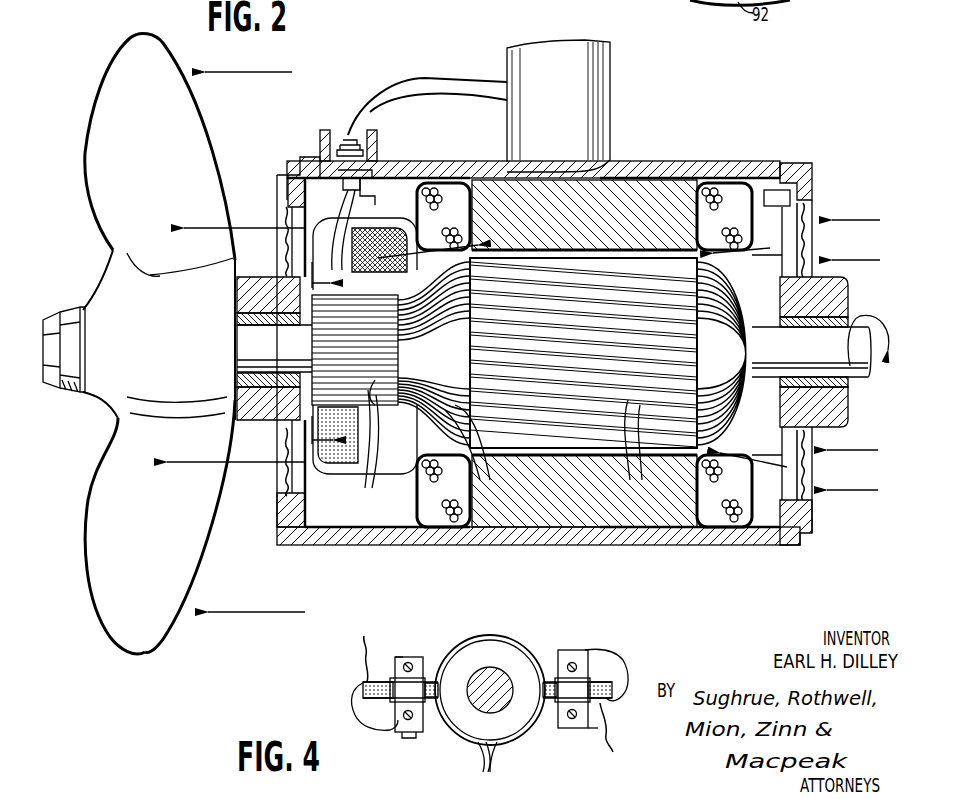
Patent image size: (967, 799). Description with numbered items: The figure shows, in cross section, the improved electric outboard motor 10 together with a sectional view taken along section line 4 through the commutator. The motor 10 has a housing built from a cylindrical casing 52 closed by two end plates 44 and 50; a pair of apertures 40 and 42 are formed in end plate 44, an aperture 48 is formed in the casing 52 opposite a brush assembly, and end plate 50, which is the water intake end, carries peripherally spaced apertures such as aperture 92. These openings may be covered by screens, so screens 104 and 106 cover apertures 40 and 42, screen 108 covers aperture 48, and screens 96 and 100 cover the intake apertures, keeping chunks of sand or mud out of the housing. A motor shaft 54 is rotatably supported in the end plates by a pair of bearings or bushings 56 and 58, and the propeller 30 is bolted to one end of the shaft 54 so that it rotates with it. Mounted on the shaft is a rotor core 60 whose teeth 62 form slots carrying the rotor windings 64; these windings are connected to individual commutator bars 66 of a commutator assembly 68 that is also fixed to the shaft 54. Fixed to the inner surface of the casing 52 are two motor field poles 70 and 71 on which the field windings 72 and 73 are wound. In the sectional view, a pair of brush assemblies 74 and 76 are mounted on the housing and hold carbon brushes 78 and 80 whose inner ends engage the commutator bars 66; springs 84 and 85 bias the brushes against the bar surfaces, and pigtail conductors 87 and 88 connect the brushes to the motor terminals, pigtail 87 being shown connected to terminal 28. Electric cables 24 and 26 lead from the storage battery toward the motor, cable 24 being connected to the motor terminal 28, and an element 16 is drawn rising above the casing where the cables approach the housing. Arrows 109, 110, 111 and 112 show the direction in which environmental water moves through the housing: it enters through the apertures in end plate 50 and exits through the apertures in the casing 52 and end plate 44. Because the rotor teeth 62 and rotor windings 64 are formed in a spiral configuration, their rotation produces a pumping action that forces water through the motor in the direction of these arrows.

In FIG. 2, the motor 10 is at (524, 548).
In FIG. 2, the brush holder tube 16 is at (598, 84).
In FIG. 2, the electric cable 24 is at (378, 92).
In FIG. 2, the electric cable 26 is at (395, 92).
In FIG. 2, the motor terminal 28 is at (350, 132).
In FIG. 2, the propeller 30 is at (122, 62).
In FIG. 2, the aperture 40 is at (285, 206).
In FIG. 2, the aperture 42 is at (281, 470).
In FIG. 2, the end plate 44 is at (285, 172).
In FIG. 2, the aperture 48 is at (345, 262).
In FIG. 2, the end plate 50 is at (810, 184).
In FIG. 2, the cylindrical casing 52 is at (672, 162).
In FIG. 2, the motor shaft 54 is at (279, 354).
In FIG. 4, the motor shaft 54 is at (507, 670).
In FIG. 2, the bearing or bushing 56 is at (251, 280).
In FIG. 2, the bearing or bushing 58 is at (853, 326).
In FIG. 2, the rotor core 60 is at (615, 546).
In FIG. 2, the rotor teeth 62 is at (637, 492).
In FIG. 2, the rotor windings 64 is at (490, 481).
In FIG. 2, the commutator bars 66 is at (382, 440).
In FIG. 4, the commutator bars 66 is at (490, 772).
In FIG. 2, the commutator assembly 68 is at (360, 412).
In FIG. 4, the commutator assembly 68 is at (452, 742).
In FIG. 2, the motor field pole 70 is at (597, 222).
In FIG. 2, the motor field pole 71 is at (591, 496).
In FIG. 2, the field winding 72 is at (740, 190).
In FIG. 2, the field winding 73 is at (716, 515).
In FIG. 4, the brush assembly 74 is at (398, 742).
In FIG. 4, the brush assembly 76 is at (563, 732).
In FIG. 4, the carbon brush 78 is at (383, 657).
In FIG. 4, the carbon brush 80 is at (597, 730).
In FIG. 4, the spring 84 is at (355, 710).
In FIG. 4, the spring 85 is at (627, 669).
In FIG. 2, the pigtail conductor 87 is at (348, 212).
In FIG. 4, the pigtail conductor 87 is at (359, 648).
In FIG. 2, the pigtail conductor 88 is at (788, 190).
In FIG. 4, the pigtail conductor 88 is at (613, 724).
In FIG. 2, the aperture 92 is at (797, 483).
In FIG. 2, the screen 96 is at (807, 217).
In FIG. 2, the screen 100 is at (810, 462).
In FIG. 2, the screen 104 is at (283, 228).
In FIG. 2, the screen 106 is at (280, 488).
In FIG. 2, the screen 108 is at (384, 240).
In FIG. 2, the arrow 109 is at (875, 260).
In FIG. 2, the arrow 110 is at (760, 253).
In FIG. 2, the arrow 111 is at (470, 251).
In FIG. 2, the arrow 112 is at (234, 76).
In FIG. 2, the section line 4— 4 is at (324, 353).